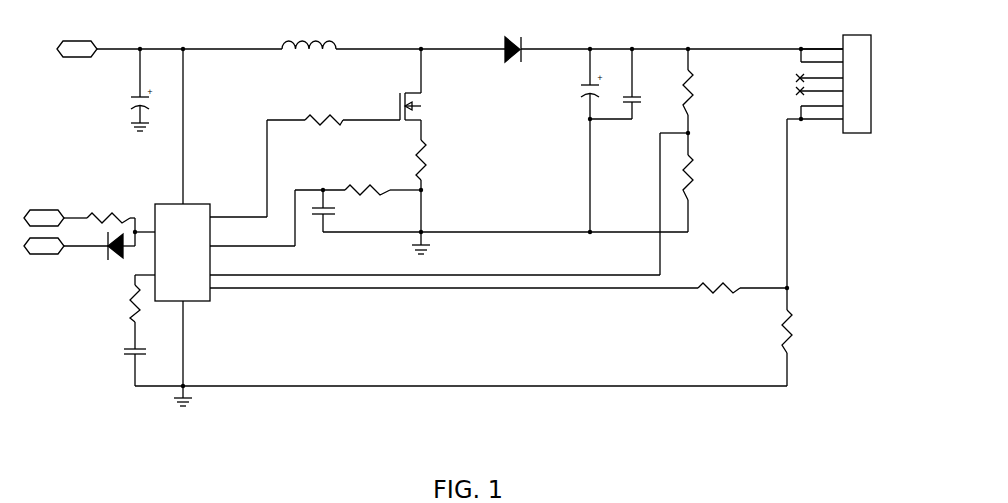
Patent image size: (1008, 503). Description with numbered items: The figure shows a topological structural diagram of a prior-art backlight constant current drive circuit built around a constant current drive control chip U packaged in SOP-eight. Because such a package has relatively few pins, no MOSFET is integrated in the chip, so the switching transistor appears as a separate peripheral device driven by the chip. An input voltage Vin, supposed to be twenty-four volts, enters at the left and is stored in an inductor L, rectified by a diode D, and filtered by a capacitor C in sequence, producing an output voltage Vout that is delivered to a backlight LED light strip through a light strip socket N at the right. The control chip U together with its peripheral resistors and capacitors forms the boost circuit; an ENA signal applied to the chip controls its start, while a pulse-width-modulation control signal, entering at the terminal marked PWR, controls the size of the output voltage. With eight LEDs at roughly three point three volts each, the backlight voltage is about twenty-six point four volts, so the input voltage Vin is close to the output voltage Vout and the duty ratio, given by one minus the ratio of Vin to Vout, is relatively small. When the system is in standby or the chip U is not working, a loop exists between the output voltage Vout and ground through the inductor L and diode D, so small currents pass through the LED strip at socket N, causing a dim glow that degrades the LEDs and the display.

The input voltage Vin is at (77, 49).
The inductor L is at (309, 39).
The diode D is at (520, 49).
The capacitor C is at (637, 84).
The output voltage Vout is at (775, 49).
The light strip socket N is at (833, 78).
The constant current drive control chip U is at (182, 247).
The power input terminal PWR is at (44, 218).
The ENA signal ENA is at (44, 246).